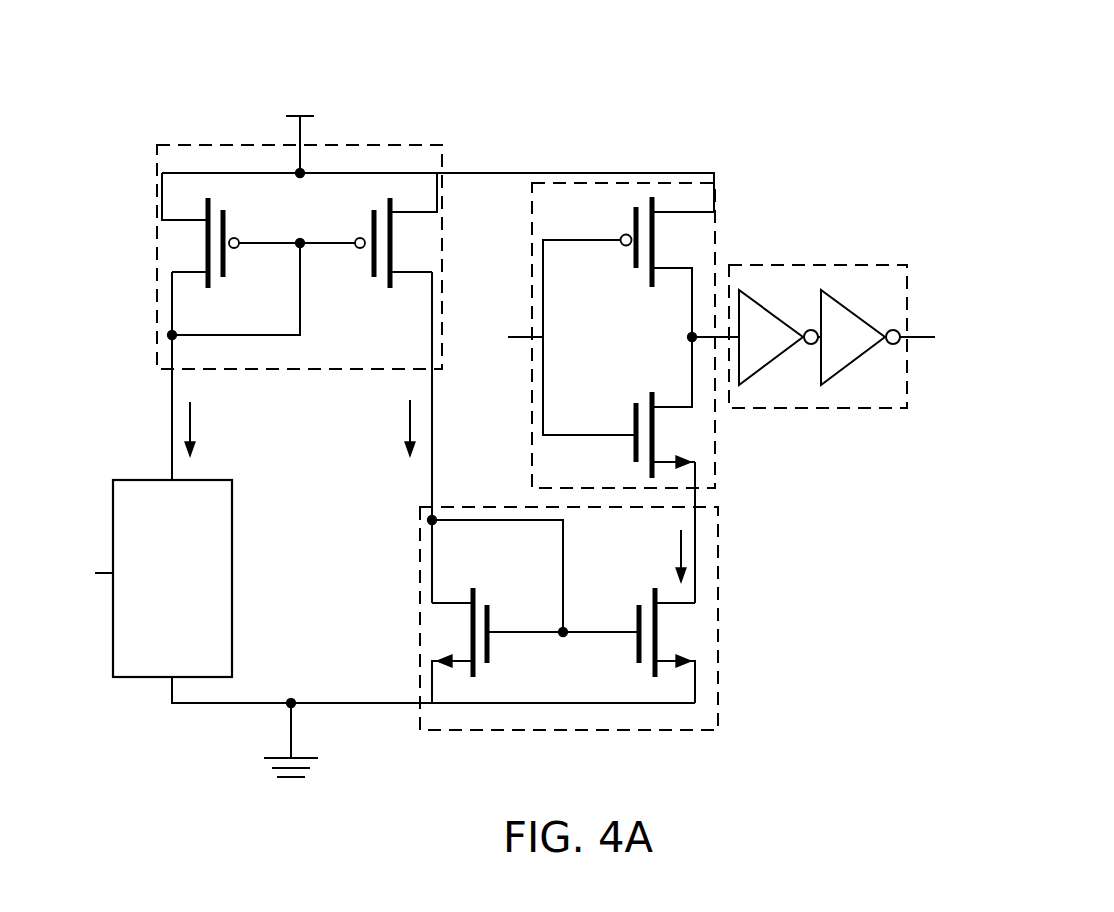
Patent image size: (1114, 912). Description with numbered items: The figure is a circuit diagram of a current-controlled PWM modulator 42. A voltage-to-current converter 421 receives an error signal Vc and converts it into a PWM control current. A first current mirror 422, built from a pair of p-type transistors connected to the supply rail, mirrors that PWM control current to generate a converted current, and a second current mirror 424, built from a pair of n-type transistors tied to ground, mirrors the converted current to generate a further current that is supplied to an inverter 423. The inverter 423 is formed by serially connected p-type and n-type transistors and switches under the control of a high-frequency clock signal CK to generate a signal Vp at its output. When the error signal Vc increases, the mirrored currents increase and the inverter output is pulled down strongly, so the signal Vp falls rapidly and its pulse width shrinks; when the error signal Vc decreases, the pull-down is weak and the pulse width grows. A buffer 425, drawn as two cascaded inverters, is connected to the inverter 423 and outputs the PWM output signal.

The current-controlled PWM modulator 42 is at (477, 72).
The voltage-to-current converter 421 is at (133, 480).
The first current mirror 422 is at (183, 145).
The inverter 423 is at (707, 183).
The second current mirror 424 is at (718, 534).
The buffer 425 is at (800, 265).